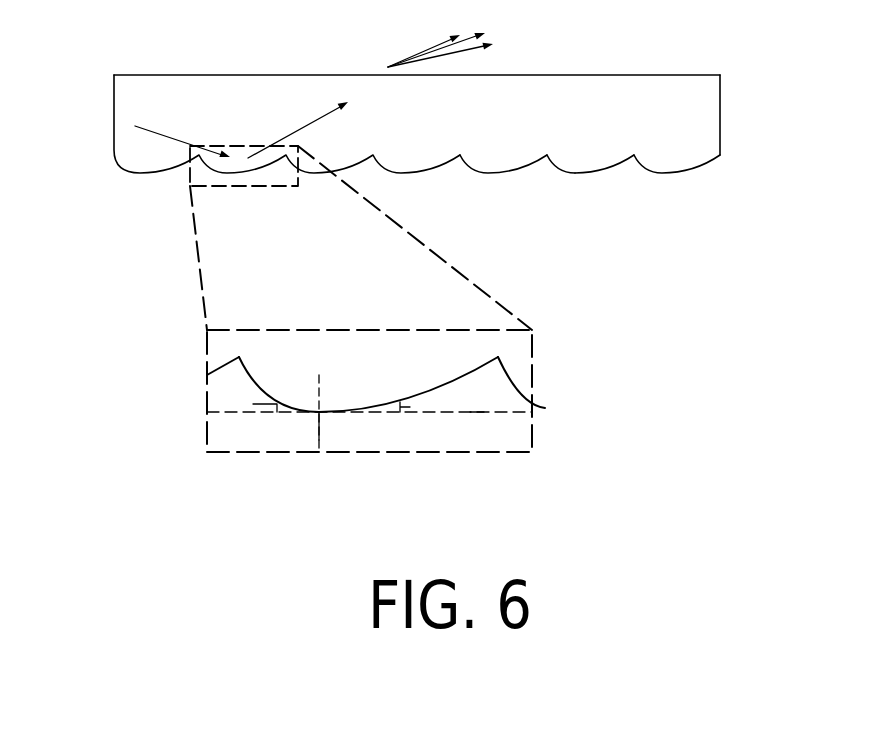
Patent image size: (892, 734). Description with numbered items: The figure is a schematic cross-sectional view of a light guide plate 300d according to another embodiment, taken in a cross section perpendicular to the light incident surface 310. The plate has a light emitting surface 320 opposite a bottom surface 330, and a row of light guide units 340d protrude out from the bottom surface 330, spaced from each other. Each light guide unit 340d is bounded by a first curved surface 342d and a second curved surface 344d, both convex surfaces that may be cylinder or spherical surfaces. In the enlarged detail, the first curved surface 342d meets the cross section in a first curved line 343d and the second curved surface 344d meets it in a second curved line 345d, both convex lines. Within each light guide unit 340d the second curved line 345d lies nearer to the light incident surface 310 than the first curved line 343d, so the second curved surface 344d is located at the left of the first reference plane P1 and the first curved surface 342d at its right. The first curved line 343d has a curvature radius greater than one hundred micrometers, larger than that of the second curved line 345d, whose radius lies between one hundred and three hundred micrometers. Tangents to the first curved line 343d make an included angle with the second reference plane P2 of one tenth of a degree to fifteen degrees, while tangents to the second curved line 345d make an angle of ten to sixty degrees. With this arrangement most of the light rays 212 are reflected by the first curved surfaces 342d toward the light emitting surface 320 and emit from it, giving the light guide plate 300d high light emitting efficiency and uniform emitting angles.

The light guide plate 300d is at (728, 502).
The light incident surface 310 is at (107, 83).
The light emitting surface 320 is at (713, 69).
The bottom surface 330 is at (715, 187).
The light guide unit 340d is at (487, 173).
The first curved surface 342d is at (611, 176).
The second curved surface 344d is at (560, 180).
The first curved line 343d is at (480, 378).
The second curved line 345d is at (240, 379).
The light ray 212 is at (170, 134).
The first reference plane P1 is at (330, 434).
The second reference plane P2 is at (477, 423).